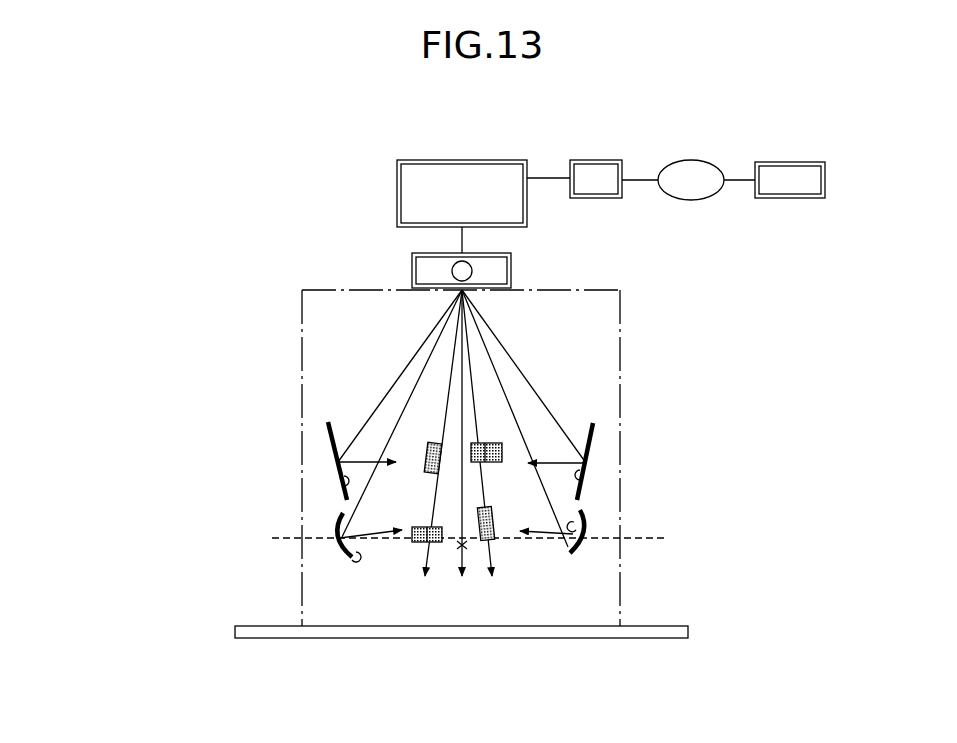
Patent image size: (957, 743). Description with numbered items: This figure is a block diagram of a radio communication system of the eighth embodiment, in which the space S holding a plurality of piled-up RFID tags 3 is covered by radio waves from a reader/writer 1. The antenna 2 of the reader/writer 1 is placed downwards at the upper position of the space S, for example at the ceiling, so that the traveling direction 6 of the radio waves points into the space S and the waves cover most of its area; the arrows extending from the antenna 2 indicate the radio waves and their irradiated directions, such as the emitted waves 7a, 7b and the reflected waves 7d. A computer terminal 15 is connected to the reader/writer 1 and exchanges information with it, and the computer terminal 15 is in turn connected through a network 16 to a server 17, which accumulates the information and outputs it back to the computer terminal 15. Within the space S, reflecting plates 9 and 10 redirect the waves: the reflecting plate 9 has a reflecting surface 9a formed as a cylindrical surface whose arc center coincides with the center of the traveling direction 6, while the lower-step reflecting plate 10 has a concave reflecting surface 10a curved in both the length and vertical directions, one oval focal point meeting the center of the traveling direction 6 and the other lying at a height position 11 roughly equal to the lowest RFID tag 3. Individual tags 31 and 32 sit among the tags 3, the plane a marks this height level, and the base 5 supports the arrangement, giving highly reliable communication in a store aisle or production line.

The reader/writer 1 is at (397, 176).
The antenna 2 is at (412, 270).
The RFID tag 3 is at (490, 443).
The first sample 31 is at (435, 442).
The second sample 32 is at (488, 507).
The base plate 5 is at (643, 626).
The traveling direction 6 is at (464, 556).
The emitted light 7a is at (430, 335).
The emitted light 7b is at (403, 427).
The reflected light 7d is at (372, 458).
The reflecting plate 9 is at (330, 452).
The reflecting surface 9a is at (343, 487).
The reflecting plate 10 is at (340, 546).
The reflecting surface 10a is at (353, 557).
The height position 11 is at (460, 548).
The computer terminal 15 is at (612, 160).
The network 16 is at (692, 160).
The server 17 is at (795, 162).
The space S is at (622, 322).
The reference plane a is at (469, 540).